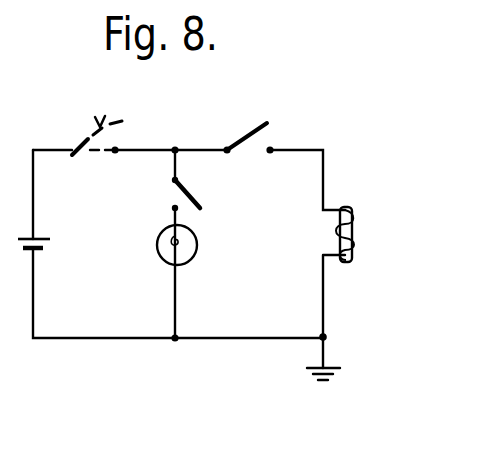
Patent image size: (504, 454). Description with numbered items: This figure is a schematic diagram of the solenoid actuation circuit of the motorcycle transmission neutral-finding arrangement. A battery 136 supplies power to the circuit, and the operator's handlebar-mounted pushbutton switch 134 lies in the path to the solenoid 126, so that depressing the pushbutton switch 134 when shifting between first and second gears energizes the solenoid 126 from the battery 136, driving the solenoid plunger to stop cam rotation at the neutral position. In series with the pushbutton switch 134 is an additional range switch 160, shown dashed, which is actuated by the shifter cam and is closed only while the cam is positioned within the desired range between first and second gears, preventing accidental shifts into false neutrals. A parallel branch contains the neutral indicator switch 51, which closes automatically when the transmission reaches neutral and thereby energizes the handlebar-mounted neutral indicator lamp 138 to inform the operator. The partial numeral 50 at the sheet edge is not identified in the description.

The additional switch 160 is at (82, 118).
The pushbutton switch 134 is at (246, 137).
The neutral indicator switch 51 is at (190, 193).
The solenoid 126 is at (350, 208).
The battery 136 is at (44, 240).
The neutral indicator lamp 138 is at (192, 261).
The circuit 50 is at (10, 380).